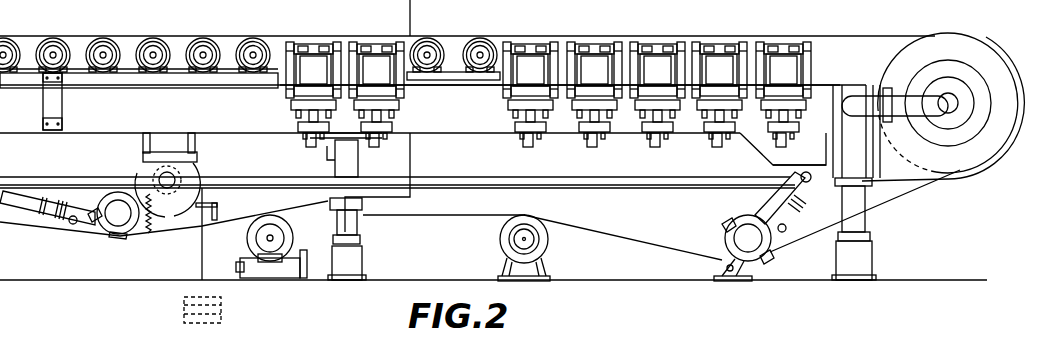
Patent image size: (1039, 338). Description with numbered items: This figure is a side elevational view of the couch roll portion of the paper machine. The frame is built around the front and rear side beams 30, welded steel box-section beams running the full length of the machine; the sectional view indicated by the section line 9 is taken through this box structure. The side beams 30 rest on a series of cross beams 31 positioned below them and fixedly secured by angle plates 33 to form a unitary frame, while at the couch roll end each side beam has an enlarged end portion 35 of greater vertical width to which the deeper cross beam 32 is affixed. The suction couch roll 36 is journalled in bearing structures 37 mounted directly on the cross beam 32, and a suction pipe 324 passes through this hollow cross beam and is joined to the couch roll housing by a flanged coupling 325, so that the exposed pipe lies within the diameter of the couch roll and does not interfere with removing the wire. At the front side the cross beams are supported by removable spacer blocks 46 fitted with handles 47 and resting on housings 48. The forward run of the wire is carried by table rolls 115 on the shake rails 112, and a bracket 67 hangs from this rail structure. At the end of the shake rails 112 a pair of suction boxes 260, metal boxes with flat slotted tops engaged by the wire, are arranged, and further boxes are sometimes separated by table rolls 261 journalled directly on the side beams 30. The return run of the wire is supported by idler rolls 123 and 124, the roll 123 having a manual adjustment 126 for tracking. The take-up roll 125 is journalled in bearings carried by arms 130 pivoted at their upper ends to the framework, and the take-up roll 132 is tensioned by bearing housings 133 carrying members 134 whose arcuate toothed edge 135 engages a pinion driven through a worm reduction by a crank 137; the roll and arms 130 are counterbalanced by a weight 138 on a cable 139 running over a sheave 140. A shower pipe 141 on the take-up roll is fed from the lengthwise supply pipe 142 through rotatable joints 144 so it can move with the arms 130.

The section line 9 is at (324, 285).
The side beams 30 is at (560, 100).
The cross beams 31 is at (358, 165).
The cross beam 32 is at (857, 85).
The angle plates 33 is at (327, 153).
The enlarged end portion 35 is at (799, 154).
The suction couch roll 36 is at (972, 55).
The bearing structures 37 is at (960, 166).
The removable spacer blocks 46 is at (360, 228).
The handles 47 is at (869, 193).
The housings 48 is at (362, 262).
The hanger bracket 67 is at (63, 103).
The shake rails 112 is at (208, 88).
The table rolls 115 is at (58, 38).
The idler roll 123 is at (247, 238).
The idler roll 124 is at (500, 239).
The take-up roll 125 is at (725, 243).
The manual adjustment 126 is at (304, 255).
The arms 130 is at (62, 190).
The take-up roll 132 is at (103, 232).
The bearing housings 133 is at (126, 237).
The members 134 is at (141, 141).
The arcuate toothed edge 135 is at (156, 228).
The crank 137 is at (218, 208).
The weight 138 is at (183, 305).
The cable 139 is at (202, 271).
The sheave 140 is at (198, 157).
The shower pipe 141 is at (70, 225).
The supply pipe 142 is at (597, 176).
The rotatable joints 144 is at (800, 173).
The suction boxes 260 is at (312, 46).
The table rolls 261 is at (432, 40).
The suction pipe 324 is at (926, 114).
The flanged coupling 325 is at (912, 97).